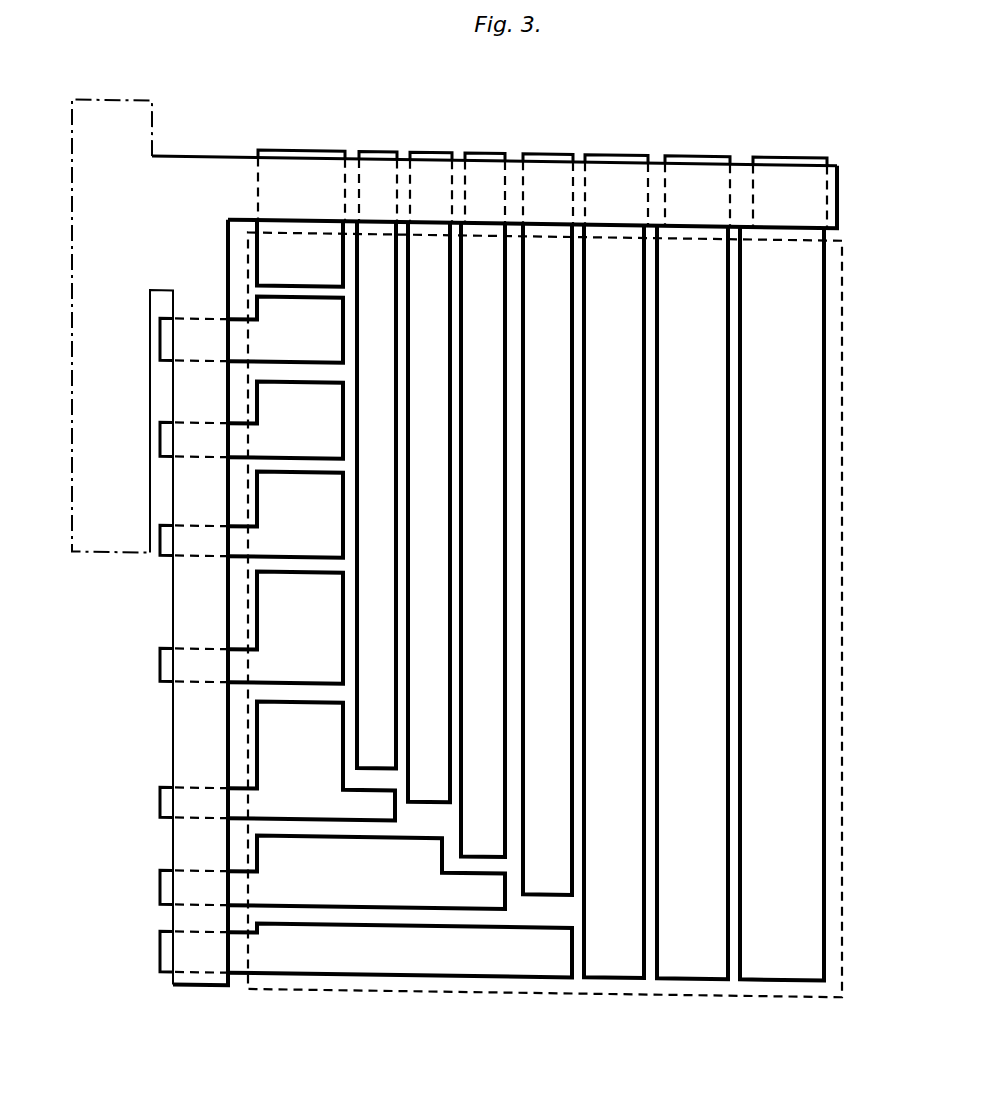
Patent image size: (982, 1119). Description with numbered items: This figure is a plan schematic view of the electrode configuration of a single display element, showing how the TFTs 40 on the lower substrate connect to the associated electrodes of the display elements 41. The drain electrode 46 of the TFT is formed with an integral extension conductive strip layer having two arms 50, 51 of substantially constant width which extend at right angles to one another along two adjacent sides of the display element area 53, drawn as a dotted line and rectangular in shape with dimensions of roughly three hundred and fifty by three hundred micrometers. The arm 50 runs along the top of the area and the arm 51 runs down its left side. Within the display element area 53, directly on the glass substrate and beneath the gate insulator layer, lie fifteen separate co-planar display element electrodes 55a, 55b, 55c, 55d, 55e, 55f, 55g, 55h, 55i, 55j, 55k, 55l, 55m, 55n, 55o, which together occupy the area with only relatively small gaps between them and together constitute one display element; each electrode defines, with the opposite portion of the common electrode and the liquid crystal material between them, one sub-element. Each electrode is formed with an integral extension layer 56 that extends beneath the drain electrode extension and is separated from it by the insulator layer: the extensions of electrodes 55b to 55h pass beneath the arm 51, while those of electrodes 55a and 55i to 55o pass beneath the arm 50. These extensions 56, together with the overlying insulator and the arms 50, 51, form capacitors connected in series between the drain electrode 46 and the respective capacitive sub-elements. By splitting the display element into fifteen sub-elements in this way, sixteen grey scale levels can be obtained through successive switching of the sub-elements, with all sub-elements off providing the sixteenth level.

The TFTs 40 is at (90, 349).
The associated electrodes of the display elements 41 is at (607, 987).
The drain electrode 46 is at (195, 170).
The arm 50 is at (737, 165).
The arm 51 is at (185, 742).
The display element area 53 is at (845, 565).
The display element electrode 55a is at (280, 271).
The display element electrode 55b is at (280, 341).
The display element electrode 55c is at (280, 436).
The display element electrode 55d is at (280, 528).
The display element electrode 55e is at (280, 633).
The display element electrode 55f is at (276, 768).
The display element electrode 55g is at (307, 885).
The display element electrode 55h is at (352, 957).
The display element electrode 55i is at (364, 272).
The display element electrode 55j is at (414, 271).
The display element electrode 55k is at (467, 270).
The display element electrode 55l is at (533, 269).
The display element electrode 55m is at (592, 268).
The display element electrode 55n is at (673, 267).
The display element electrode 55o is at (764, 266).
The extension layers 56 is at (258, 146).